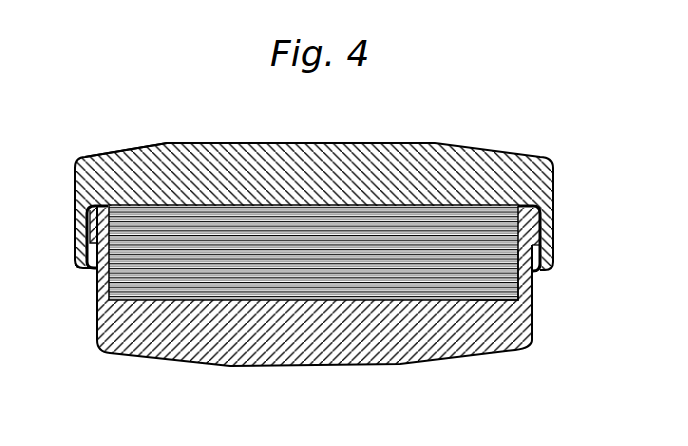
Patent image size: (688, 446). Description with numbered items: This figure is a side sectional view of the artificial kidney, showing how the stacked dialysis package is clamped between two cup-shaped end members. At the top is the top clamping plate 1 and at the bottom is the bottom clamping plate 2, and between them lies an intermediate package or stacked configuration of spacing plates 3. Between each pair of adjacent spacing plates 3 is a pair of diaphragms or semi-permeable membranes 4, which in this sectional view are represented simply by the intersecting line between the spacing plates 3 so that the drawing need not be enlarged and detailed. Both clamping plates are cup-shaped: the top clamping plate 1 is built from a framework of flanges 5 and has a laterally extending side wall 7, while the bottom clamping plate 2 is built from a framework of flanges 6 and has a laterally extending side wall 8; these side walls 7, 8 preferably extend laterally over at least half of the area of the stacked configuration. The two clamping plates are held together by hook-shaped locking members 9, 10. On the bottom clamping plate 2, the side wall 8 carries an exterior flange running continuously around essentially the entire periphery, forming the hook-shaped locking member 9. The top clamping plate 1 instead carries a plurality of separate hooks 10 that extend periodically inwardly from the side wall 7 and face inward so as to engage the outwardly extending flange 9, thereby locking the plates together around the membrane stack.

The top clamping plate 1 is at (450, 167).
The bottom clamping plate 2 is at (208, 342).
The spacing plates 3 is at (415, 290).
The semi-permeable membranes 4 is at (488, 283).
The flanges of top clamping plate 5 is at (167, 147).
The flanges of bottom clamping plate 6 is at (137, 332).
The side wall of top clamping plate 7 is at (553, 223).
The side wall of bottom clamping plate 8 is at (533, 290).
The hook-shaped locking member 9 is at (549, 205).
The hooks 10 is at (553, 250).